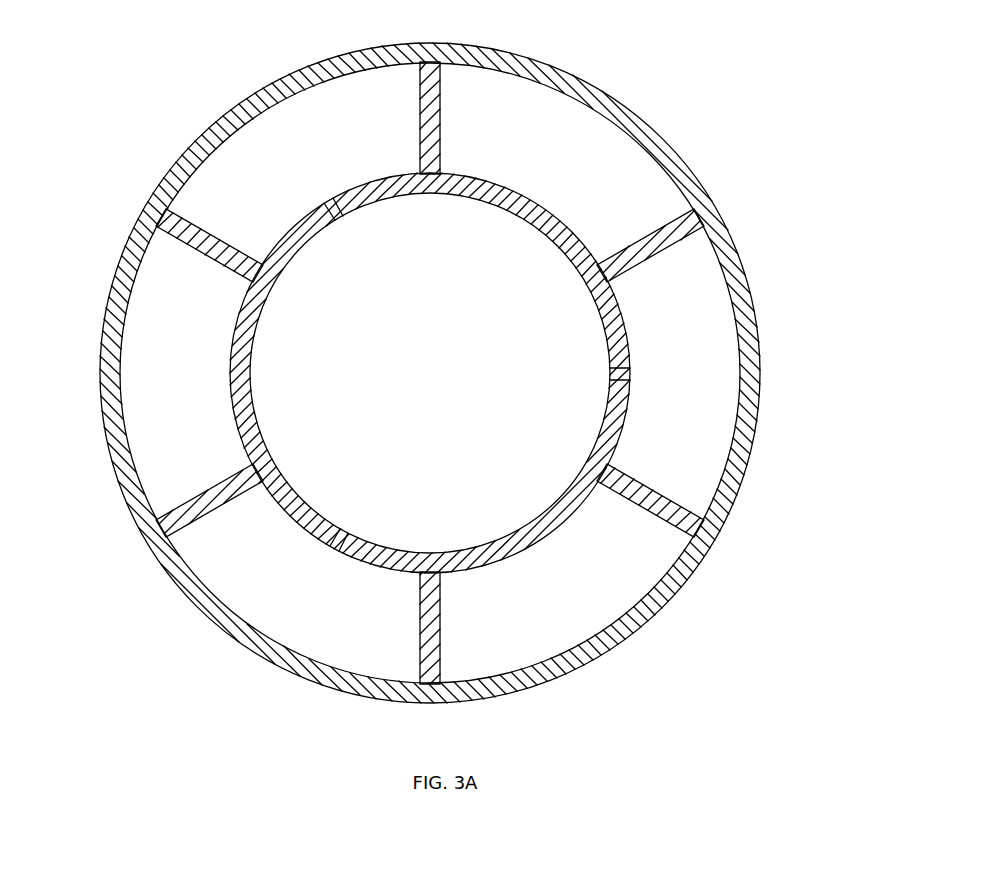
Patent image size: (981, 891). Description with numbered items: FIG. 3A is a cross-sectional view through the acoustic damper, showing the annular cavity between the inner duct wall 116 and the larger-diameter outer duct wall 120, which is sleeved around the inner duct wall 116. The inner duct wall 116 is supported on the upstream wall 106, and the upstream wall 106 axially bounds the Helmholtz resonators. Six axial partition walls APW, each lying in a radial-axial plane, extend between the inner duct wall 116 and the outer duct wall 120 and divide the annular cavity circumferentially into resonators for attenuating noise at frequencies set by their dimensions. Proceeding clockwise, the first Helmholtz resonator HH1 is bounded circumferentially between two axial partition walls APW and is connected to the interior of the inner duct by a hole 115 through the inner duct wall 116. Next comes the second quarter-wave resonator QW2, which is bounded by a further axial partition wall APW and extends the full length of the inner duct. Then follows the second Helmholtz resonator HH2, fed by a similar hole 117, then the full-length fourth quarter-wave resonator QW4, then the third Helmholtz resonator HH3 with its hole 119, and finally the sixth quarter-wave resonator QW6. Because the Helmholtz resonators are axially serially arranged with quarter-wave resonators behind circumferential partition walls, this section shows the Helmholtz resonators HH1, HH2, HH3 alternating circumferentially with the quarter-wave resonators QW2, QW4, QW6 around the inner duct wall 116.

The upstream wall 106 is at (148, 419).
The outer duct wall 120 is at (227, 112).
The inner duct wall 116 is at (242, 347).
The axial partition wall APW is at (430, 97).
The hole 115 is at (612, 377).
The hole 117 is at (340, 535).
The hole 119 is at (335, 208).
The first Helmholtz resonator HH1 is at (693, 352).
The second Helmholtz resonator HH2 is at (283, 620).
The third Helmholtz resonator HH3 is at (297, 110).
The second quarter-wave resonator QW2 is at (595, 602).
The fourth quarter-wave resonator QW4 is at (170, 365).
The sixth quarter-wave resonator QW6 is at (585, 138).